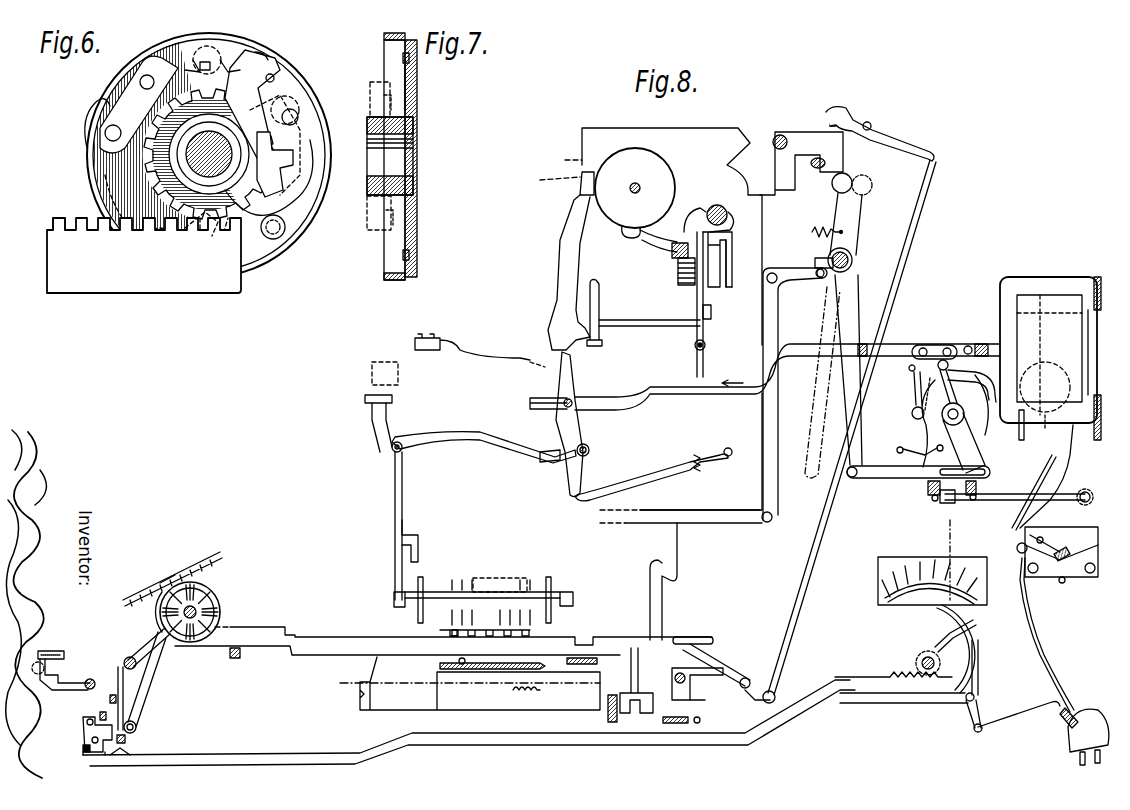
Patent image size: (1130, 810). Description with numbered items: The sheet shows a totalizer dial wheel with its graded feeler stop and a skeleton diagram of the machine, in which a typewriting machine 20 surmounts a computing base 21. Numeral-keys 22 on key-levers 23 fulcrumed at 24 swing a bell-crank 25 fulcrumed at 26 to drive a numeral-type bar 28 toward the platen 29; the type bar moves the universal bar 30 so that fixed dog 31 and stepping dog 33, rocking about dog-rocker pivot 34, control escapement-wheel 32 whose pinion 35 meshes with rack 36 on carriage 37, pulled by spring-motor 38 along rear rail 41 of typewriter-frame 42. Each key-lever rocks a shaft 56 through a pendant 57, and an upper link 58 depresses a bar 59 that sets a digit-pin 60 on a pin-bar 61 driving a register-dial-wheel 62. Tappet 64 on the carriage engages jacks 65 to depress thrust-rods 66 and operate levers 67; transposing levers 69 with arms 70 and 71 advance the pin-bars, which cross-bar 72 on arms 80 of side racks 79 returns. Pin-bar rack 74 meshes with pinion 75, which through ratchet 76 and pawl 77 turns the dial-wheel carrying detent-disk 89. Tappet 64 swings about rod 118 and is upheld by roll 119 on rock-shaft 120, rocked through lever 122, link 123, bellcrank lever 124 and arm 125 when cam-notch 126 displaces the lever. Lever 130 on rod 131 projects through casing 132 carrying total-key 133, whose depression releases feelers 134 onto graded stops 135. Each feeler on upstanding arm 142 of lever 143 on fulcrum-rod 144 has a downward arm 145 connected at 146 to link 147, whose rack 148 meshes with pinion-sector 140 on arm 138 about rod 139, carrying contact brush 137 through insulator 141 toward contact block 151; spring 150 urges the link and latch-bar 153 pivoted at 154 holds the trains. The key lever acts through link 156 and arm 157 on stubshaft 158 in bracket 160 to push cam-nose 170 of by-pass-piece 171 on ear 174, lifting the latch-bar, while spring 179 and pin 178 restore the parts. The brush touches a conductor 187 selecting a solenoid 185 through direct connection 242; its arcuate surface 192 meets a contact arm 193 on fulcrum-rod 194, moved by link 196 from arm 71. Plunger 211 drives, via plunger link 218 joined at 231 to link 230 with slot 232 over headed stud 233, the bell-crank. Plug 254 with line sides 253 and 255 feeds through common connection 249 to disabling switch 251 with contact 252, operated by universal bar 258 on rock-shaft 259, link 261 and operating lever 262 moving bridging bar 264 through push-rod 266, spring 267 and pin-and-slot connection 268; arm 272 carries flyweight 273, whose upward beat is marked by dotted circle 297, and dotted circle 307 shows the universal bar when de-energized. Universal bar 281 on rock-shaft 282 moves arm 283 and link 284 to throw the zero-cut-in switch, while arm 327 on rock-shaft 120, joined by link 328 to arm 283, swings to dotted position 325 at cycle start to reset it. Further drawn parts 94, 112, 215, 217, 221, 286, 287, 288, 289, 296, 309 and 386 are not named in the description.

In FIG. 8, the typewriting machine 20 is at (520, 286).
In FIG. 8, the computing base 21 is at (327, 575).
In FIG. 8, the numeral-keys 22 is at (372, 375).
In FIG. 8, the key-levers 23 is at (437, 434).
In FIG. 8, the key-lever fulcrum 24 is at (728, 448).
In FIG. 8, the bell-crank 25 is at (557, 426).
In FIG. 8, the bell-crank fulcrum 26 is at (590, 451).
In FIG. 8, the numeral-type bar 28 is at (558, 256).
In FIG. 8, the platen 29 is at (635, 183).
In FIG. 8, the universal bar 30 is at (599, 306).
In FIG. 8, the fixed dog 31 is at (697, 312).
In FIG. 8, the escapement-wheel 32 is at (680, 240).
In FIG. 8, the stepping dog 33 is at (711, 314).
In FIG. 8, the dog-rocker pivot 34 is at (689, 348).
In FIG. 8, the pinion 35 is at (678, 275).
In FIG. 8, the rack 36 is at (672, 250).
In FIG. 8, the traveling carriage 37 is at (573, 157).
In FIG. 8, the spring-motor 38 is at (732, 281).
In FIG. 8, the rear rail 41 is at (713, 206).
In FIG. 8, the typewriter-frame 42 is at (728, 257).
In FIG. 8, the shaft 56 is at (442, 596).
In FIG. 8, the pendant 57 is at (395, 584).
In FIG. 8, the upper link 58 is at (521, 586).
In FIG. 8, the pin-setting bar 59 is at (494, 612).
In FIG. 8, the digit-pin 60 is at (452, 638).
In FIG. 6, the pin-bar 61 is at (89, 294).
In FIG. 8, the pin-bar 61 is at (352, 638).
In FIG. 6, the register-dial-wheel 62 is at (81, 157).
In FIG. 7, the register-dial-wheel 62 is at (378, 282).
In FIG. 8, the register-dial-wheel 62 is at (206, 586).
In FIG. 8, the tappet 64 is at (829, 120).
In FIG. 8, the pivoted jacks 65 is at (840, 110).
In FIG. 8, the thrust-rods 66 is at (903, 247).
In FIG. 8, the levers 67 is at (742, 700).
In FIG. 8, the transposing levers 69 is at (700, 701).
In FIG. 8, the transposing-lever arm 70 is at (700, 682).
In FIG. 8, the transposed arm 71 is at (680, 642).
In FIG. 8, the cross-bar 72 is at (566, 661).
In FIG. 6, the rack 74 is at (59, 217).
In FIG. 8, the rack 74 is at (284, 630).
In FIG. 6, the pinion 75 is at (198, 230).
In FIG. 7, the pinion 75 is at (370, 95).
In FIG. 6, the ratchet 76 is at (274, 152).
In FIG. 7, the ratchet 76 is at (413, 222).
In FIG. 6, the pawl 77 is at (293, 180).
In FIG. 8, the side racks 79 is at (540, 710).
In FIG. 8, the arms 80 is at (472, 686).
In FIG. 6, the detent-disk 89 is at (271, 58).
In FIG. 7, the detent-disk 89 is at (417, 93).
In FIG. 8, the detent-disk 89 is at (213, 602).
In FIG. 8, the bar 94 is at (440, 667).
In FIG. 8, the pivot 112 is at (748, 680).
In FIG. 8, the carriage rod 118 is at (779, 134).
In FIG. 8, the roll 119 is at (852, 178).
In FIG. 8, the rock-shaft 120 is at (853, 256).
In FIG. 8, the lever 122 is at (664, 612).
In FIG. 8, the link 123 is at (724, 508).
In FIG. 8, the bellcrank lever 124 is at (779, 300).
In FIG. 8, the arm 125 is at (815, 259).
In FIG. 8, the cam-notch 126 is at (608, 720).
In FIG. 8, the total-key lever 130 is at (55, 688).
In FIG. 8, the fulcrum-rod 131 is at (90, 680).
In FIG. 8, the casing 132 is at (206, 558).
In FIG. 8, the total-key 133 is at (64, 655).
In FIG. 8, the feelers 134 is at (165, 603).
In FIG. 6, the graded stops 135 is at (232, 66).
In FIG. 8, the graded stops 135 is at (219, 612).
In FIG. 8, the contact brush 137 is at (945, 604).
In FIG. 8, the arm 138 is at (946, 644).
In FIG. 8, the rod 139 is at (935, 667).
In FIG. 8, the pinion-sector 140 is at (916, 660).
In FIG. 8, the insulator 141 is at (976, 628).
In FIG. 8, the upstanding arms 142 is at (158, 650).
In FIG. 8, the feeler levers 143 is at (146, 645).
In FIG. 8, the fulcrum-rod 144 is at (127, 658).
In FIG. 8, the downwardly-extending arm 145 is at (141, 679).
In FIG. 8, the pivotal connection 146 is at (126, 756).
In FIG. 8, the link 147 is at (722, 747).
In FIG. 8, the rack 148 is at (900, 695).
In FIG. 8, the spring 150 is at (663, 721).
In FIG. 8, the contact block 151 is at (878, 588).
In FIG. 8, the latch-bar 153 is at (88, 755).
In FIG. 8, the latch-bar pivot 154 is at (83, 748).
In FIG. 8, the link 156 is at (116, 697).
In FIG. 8, the arm 157 is at (102, 713).
In FIG. 8, the stubshaft 158 is at (134, 720).
In FIG. 8, the bracket 160 is at (928, 492).
In FIG. 8, the cam-nose 170 is at (87, 722).
In FIG. 8, the by-pass-piece 171 is at (92, 738).
In FIG. 8, the ear 174 is at (86, 720).
In FIG. 8, the pin 178 is at (128, 736).
In FIG. 8, the spring 179 is at (118, 676).
In FIG. 8, the solenoids 185 is at (993, 283).
In FIG. 8, the conductor 187 is at (908, 585).
In FIG. 8, the arcuate surface 192 is at (977, 652).
In FIG. 8, the contact arm 193 is at (978, 676).
In FIG. 8, the fulcrum-rod 194 is at (977, 733).
In FIG. 8, the link 196 is at (720, 665).
In FIG. 8, the plunger 211 is at (1049, 354).
In FIG. 8, the housing 215 is at (1056, 298).
In FIG. 8, the shaft 217 is at (1042, 323).
In FIG. 8, the solenoid-plunger link 218 is at (983, 344).
In FIG. 8, the contact 221 is at (1101, 300).
In FIG. 8, the link 230 is at (660, 380).
In FIG. 8, the connection 231 is at (966, 346).
In FIG. 8, the slot 232 is at (529, 403).
In FIG. 8, the headed stud 233 is at (565, 400).
In FIG. 8, the direct connection 242 is at (950, 555).
In FIG. 8, the common connection 249 is at (1058, 490).
In FIG. 8, the circuit-disabling switch 251 is at (1037, 541).
In FIG. 8, the contact 252 is at (1017, 551).
In FIG. 8, the supply-line side 253 is at (1047, 660).
In FIG. 8, the plug 254 is at (1070, 750).
In FIG. 8, the supply-line side 255 is at (1053, 705).
In FIG. 8, the universal bar 258 is at (915, 400).
In FIG. 8, the rock-shaft 259 is at (912, 414).
In FIG. 8, the link 261 is at (1022, 508).
In FIG. 8, the operating lever 262 is at (1080, 530).
In FIG. 8, the bridging bar 264 is at (1070, 570).
In FIG. 8, the push-rod 266 is at (1096, 568).
In FIG. 8, the spring 267 is at (1034, 574).
In FIG. 8, the pin-and-slot connection 268 is at (1085, 492).
In FIG. 8, the arm 272 is at (1018, 430).
In FIG. 8, the flyweight 273 is at (1046, 430).
In FIG. 8, the universal bar 281 is at (963, 384).
In FIG. 8, the rock-shaft 282 is at (963, 418).
In FIG. 8, the arm 283 is at (967, 446).
In FIG. 8, the link 284 is at (968, 503).
In FIG. 8, the pivot 286 is at (949, 366).
In FIG. 8, the bracket 287 is at (920, 346).
In FIG. 8, the link 288 is at (913, 386).
In FIG. 8, the pins 289 is at (946, 347).
In FIG. 8, the spring 296 is at (912, 462).
In FIG. 8, the upper dotted circle 297 is at (1060, 364).
In FIG. 8, the small dotted circle 307 is at (908, 369).
In FIG. 8, the link 309 is at (968, 704).
In FIG. 8, the dotted-line position 325 is at (810, 420).
In FIG. 8, the downwardly-extending arm 327 is at (858, 440).
In FIG. 8, the link 328 is at (876, 479).
In FIG. 8, the bar 386 is at (184, 570).